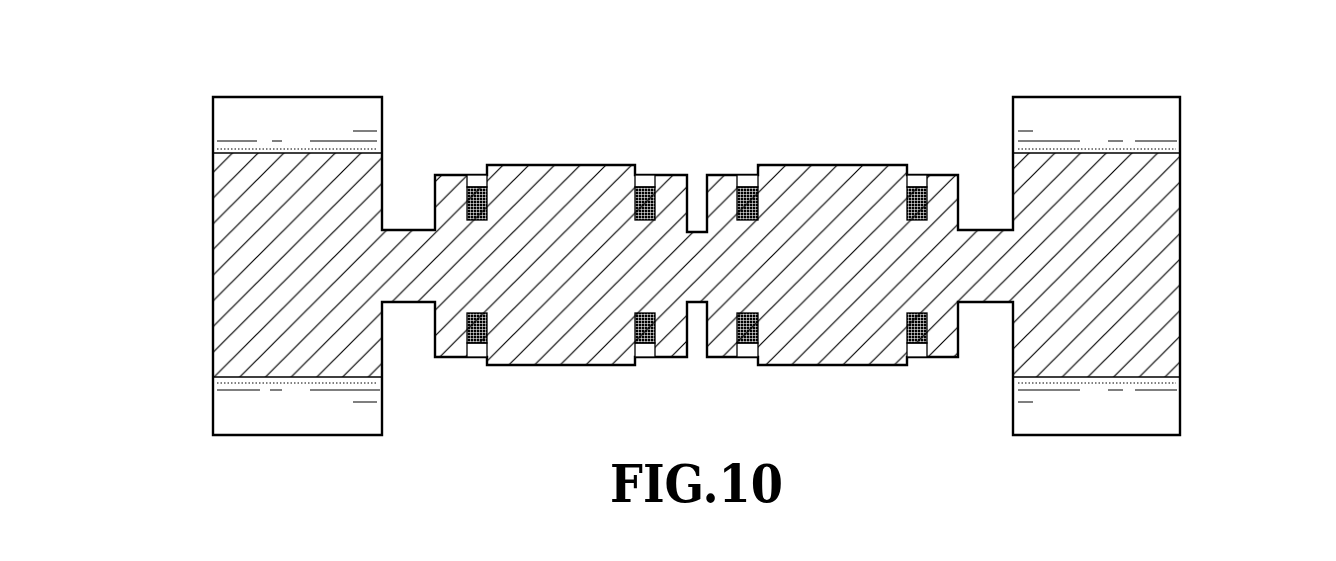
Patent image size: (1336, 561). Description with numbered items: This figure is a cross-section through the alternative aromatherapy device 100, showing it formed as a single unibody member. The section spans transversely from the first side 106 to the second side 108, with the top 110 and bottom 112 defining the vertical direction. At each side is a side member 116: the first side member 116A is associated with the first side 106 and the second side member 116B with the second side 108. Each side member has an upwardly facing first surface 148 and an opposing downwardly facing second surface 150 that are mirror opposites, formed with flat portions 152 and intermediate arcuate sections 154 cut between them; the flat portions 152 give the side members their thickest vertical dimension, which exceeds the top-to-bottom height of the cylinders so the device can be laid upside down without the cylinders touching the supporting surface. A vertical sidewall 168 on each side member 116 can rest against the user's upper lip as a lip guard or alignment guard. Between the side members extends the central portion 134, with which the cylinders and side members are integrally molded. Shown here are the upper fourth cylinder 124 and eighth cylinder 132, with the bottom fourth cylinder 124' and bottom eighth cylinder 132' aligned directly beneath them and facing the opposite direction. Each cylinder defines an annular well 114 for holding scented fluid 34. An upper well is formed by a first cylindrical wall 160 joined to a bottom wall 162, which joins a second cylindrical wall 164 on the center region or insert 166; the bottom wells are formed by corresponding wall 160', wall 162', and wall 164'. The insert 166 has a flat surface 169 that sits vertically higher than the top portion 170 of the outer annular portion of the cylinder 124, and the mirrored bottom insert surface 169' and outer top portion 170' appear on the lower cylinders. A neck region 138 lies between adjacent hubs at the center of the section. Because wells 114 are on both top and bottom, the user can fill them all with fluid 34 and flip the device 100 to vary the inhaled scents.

The aromatherapy device 100 is at (668, 280).
The first side 106 is at (226, 266).
The second side 108 is at (1170, 266).
The top 110 is at (708, 148).
The bottom 112 is at (832, 396).
The annular well 114 is at (696, 267).
The side member 116 is at (231, 81).
The first side member 116A is at (231, 81).
The second side member 116B is at (1172, 81).
The fourth cylinder 124 is at (439, 204).
The bottom fourth cylinder 124' is at (437, 391).
The eighth cylinder 132 is at (955, 204).
The bottom eighth cylinder 132' is at (957, 391).
The central portion 134 is at (355, 288).
The neck recess 138 is at (678, 259).
The first surface 148 is at (696, 49).
The second surface 150 is at (698, 467).
The flat portion 152 is at (698, 273).
The arcuate section 154 is at (697, 265).
The first cylindrical wall 160 is at (697, 222).
The first cylindrical wall 160' is at (700, 310).
The bottom wall 162 is at (697, 240).
The bottom wall 162' is at (697, 291).
The second cylindrical wall 164 is at (697, 203).
The second cylindrical wall 164' is at (697, 330).
The insert 166 is at (697, 218).
The vertical sidewall 168 is at (699, 266).
The flat surface 169 is at (561, 136).
The outer flange surface (lower) 169' is at (561, 395).
The top portion 170 is at (690, 176).
The hub (lower) 170' is at (688, 358).
The fluid 34 is at (696, 265).